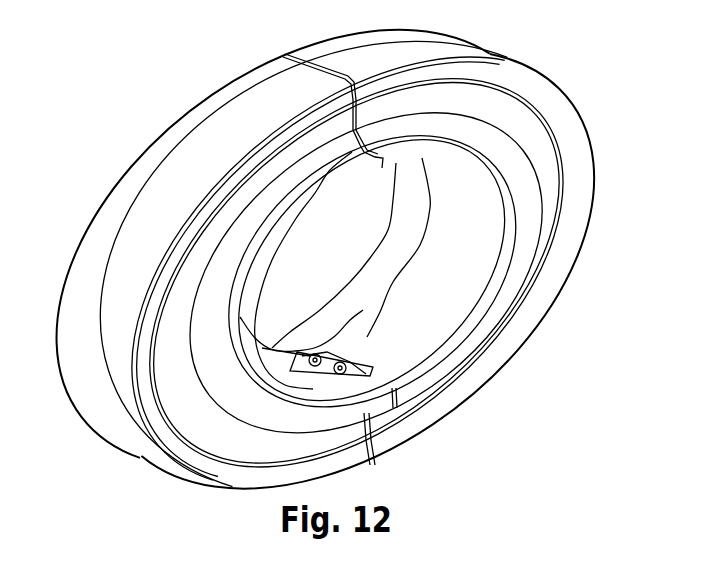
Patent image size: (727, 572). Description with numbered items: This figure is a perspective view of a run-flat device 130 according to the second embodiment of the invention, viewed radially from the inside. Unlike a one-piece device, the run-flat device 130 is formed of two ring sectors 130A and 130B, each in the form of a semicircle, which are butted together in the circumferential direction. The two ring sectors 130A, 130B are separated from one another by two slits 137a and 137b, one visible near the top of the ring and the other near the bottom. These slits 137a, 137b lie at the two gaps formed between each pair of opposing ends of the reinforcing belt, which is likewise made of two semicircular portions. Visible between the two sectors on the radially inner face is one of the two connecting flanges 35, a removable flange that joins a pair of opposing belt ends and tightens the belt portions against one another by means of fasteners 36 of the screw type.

The run-flat device 130 is at (346, 272).
The ring sector 130A is at (143, 157).
The ring sector 130B is at (526, 70).
The slit 137a is at (311, 62).
The slit 137b is at (376, 454).
The connecting flange 35 is at (341, 358).
The fasteners 36 is at (322, 373).